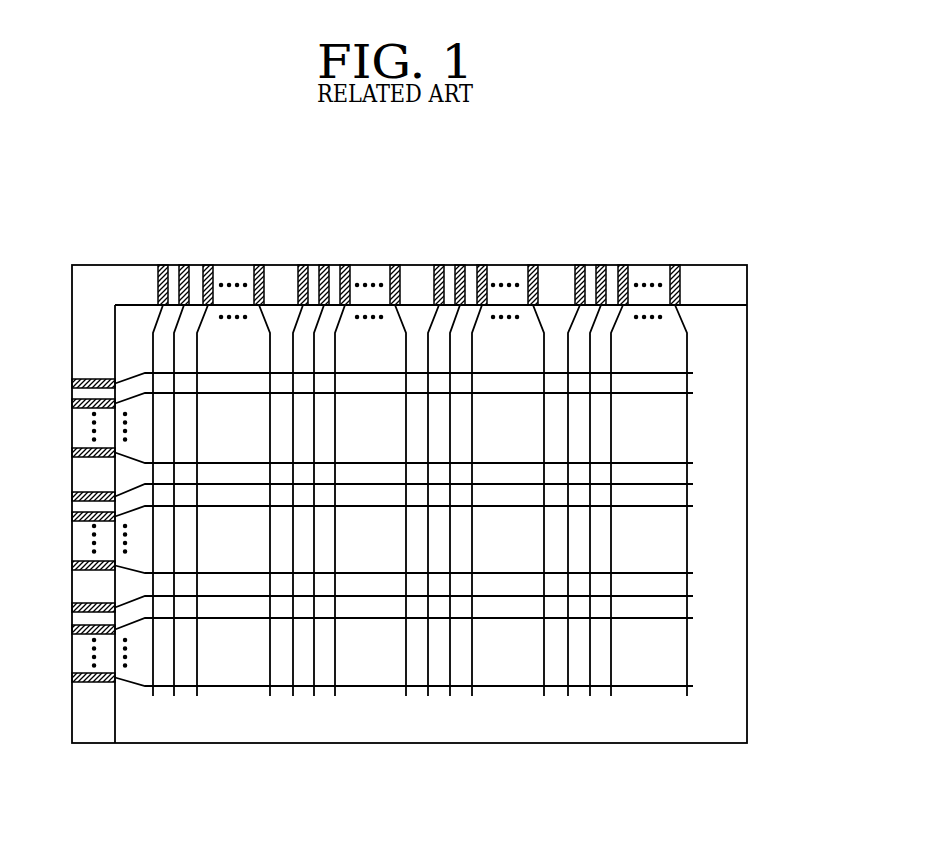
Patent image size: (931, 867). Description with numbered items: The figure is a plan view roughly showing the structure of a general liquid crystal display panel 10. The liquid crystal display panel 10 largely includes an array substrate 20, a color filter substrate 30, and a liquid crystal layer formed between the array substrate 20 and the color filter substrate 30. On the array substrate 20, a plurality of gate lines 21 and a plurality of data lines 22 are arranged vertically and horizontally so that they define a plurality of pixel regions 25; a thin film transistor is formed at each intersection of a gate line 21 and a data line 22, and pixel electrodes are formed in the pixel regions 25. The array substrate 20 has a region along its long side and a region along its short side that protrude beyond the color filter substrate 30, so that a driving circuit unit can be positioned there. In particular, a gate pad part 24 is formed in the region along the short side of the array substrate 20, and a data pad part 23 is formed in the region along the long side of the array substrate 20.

The liquid crystal display panel 10 is at (726, 247).
The array substrate 20 is at (735, 286).
The color filter substrate 30 is at (735, 345).
The gate lines 21 is at (647, 688).
The data lines 22 is at (687, 652).
The data pad part 23 is at (680, 251).
The gate pad part 24 is at (61, 377).
The pixel regions 25 is at (672, 430).